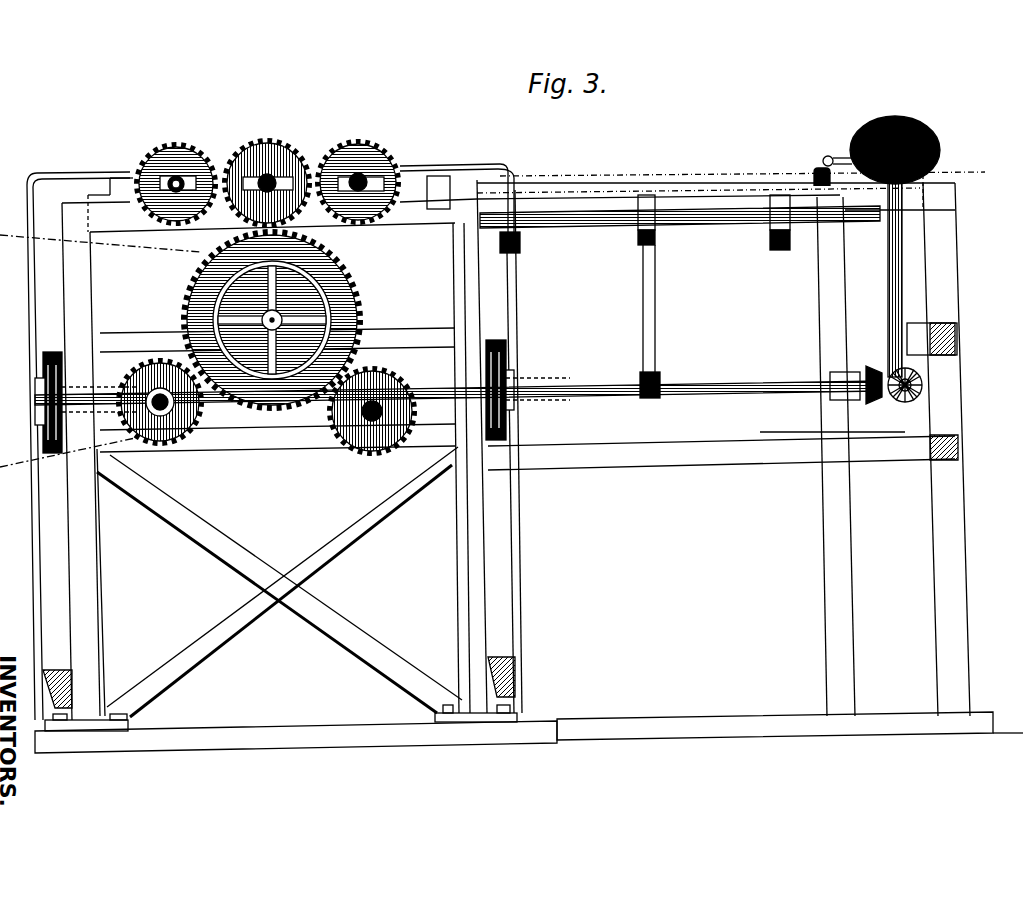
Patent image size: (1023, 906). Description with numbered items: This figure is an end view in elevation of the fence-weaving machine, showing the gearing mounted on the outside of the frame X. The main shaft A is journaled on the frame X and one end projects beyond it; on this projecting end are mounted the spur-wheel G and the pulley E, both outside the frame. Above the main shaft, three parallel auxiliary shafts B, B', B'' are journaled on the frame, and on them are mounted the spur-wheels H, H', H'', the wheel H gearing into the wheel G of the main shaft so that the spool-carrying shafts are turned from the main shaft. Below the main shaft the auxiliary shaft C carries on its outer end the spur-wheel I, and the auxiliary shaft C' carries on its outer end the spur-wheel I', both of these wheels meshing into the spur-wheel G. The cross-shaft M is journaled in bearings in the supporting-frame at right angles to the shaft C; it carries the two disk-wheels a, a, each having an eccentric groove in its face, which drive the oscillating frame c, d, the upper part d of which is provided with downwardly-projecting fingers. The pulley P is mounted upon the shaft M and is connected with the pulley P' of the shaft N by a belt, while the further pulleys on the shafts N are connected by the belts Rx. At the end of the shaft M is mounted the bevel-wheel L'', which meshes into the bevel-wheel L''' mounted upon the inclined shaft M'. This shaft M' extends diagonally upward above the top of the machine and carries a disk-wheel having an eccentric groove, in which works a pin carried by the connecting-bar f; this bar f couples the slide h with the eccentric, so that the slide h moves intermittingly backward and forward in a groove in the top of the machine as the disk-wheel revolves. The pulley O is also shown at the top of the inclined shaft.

The frame X is at (529, 462).
The oscillating frame c is at (525, 540).
The upper part of oscillating frame d is at (74, 178).
The disk-wheel a is at (274, 386).
The cross-shaft M is at (457, 386).
The inclined shaft M' is at (884, 271).
The auxiliary shaft B is at (176, 169).
The auxiliary shaft B' is at (270, 166).
The auxiliary shaft B'' is at (371, 169).
The spur-wheel H is at (269, 160).
The spur-wheel H' is at (173, 156).
The spur-wheel H'' is at (384, 166).
The spur-wheel G is at (364, 300).
The pulley E is at (352, 282).
The main shaft A is at (278, 314).
The auxiliary shaft C is at (163, 416).
The auxiliary shaft C' is at (372, 421).
The spur-wheel I is at (160, 435).
The spur-wheel I' is at (371, 446).
The belt Rx is at (520, 248).
The pulley P' is at (662, 222).
The pulley P is at (650, 396).
The pulley O is at (935, 152).
The connecting-bar f is at (837, 148).
The slide h is at (811, 170).
The bevel-wheel L'' is at (856, 373).
The bevel-wheel L''' is at (911, 389).